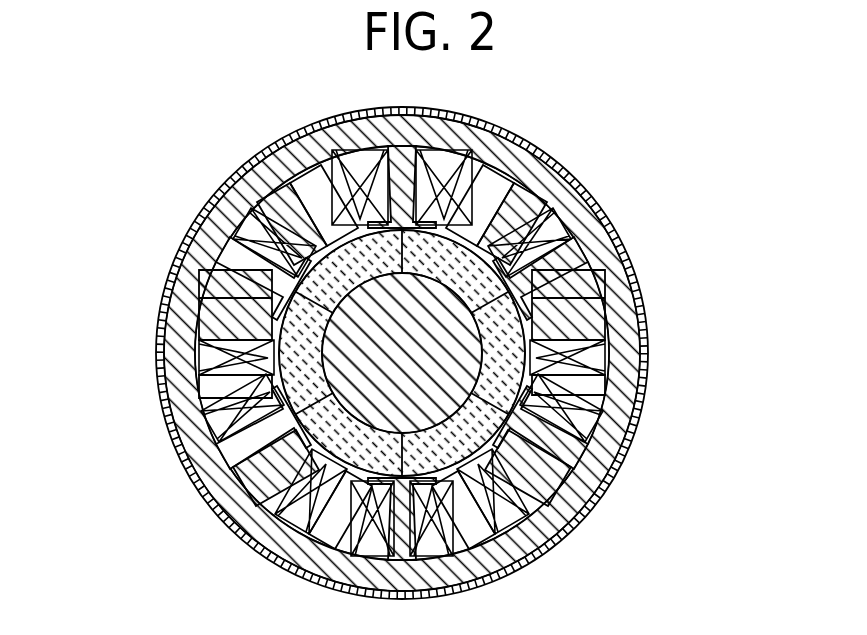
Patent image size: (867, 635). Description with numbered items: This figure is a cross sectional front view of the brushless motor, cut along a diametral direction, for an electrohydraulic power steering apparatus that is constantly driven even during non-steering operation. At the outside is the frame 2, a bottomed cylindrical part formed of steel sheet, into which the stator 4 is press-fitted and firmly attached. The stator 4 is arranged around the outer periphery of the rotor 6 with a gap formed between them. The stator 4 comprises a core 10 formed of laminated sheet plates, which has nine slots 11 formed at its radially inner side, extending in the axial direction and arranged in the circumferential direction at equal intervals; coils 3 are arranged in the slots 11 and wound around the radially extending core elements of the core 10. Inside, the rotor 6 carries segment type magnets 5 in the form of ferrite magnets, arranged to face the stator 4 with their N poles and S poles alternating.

The frame 2 is at (624, 236).
The coils 3 is at (295, 163).
The stator 4 is at (624, 447).
The segment type magnets 5 is at (303, 375).
The rotor 6 is at (372, 383).
The core 10 is at (418, 345).
The slots 11 is at (418, 186).